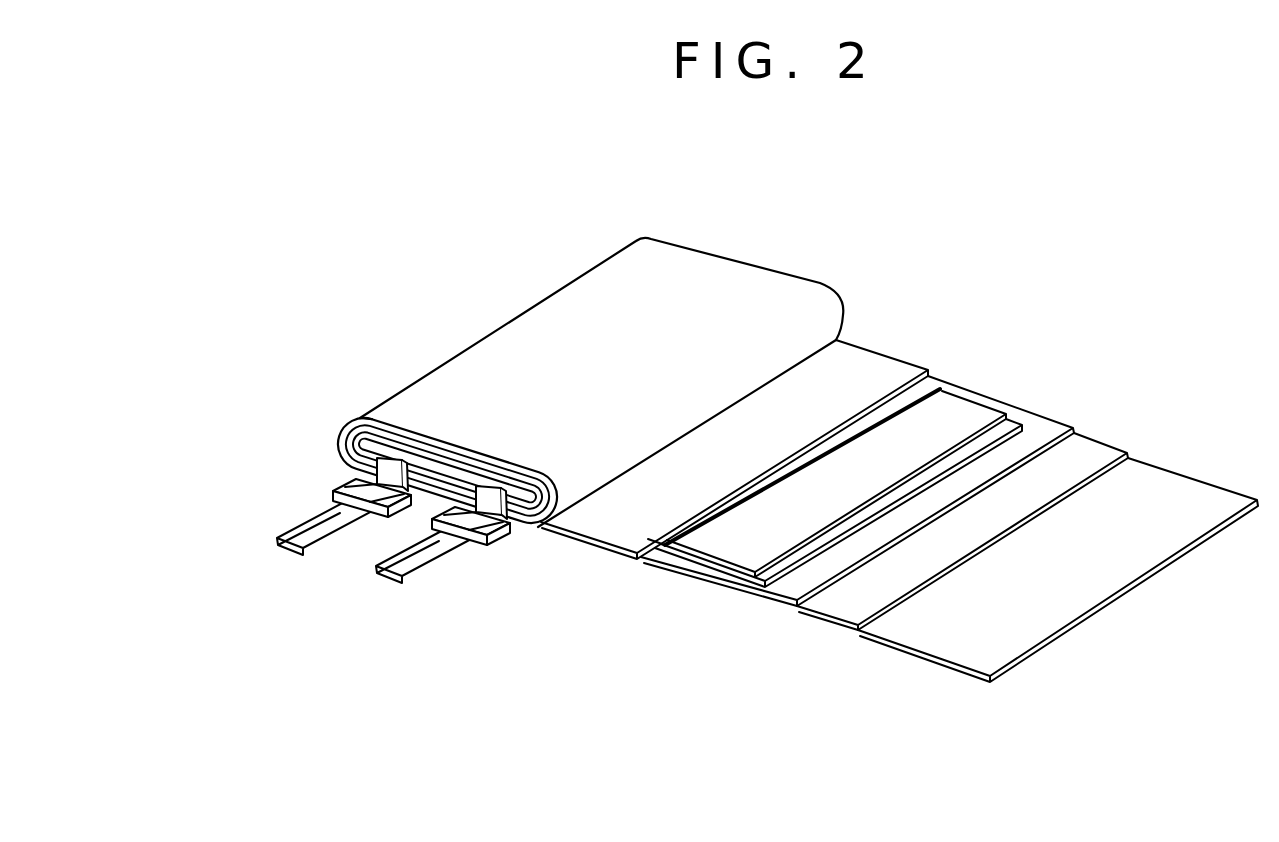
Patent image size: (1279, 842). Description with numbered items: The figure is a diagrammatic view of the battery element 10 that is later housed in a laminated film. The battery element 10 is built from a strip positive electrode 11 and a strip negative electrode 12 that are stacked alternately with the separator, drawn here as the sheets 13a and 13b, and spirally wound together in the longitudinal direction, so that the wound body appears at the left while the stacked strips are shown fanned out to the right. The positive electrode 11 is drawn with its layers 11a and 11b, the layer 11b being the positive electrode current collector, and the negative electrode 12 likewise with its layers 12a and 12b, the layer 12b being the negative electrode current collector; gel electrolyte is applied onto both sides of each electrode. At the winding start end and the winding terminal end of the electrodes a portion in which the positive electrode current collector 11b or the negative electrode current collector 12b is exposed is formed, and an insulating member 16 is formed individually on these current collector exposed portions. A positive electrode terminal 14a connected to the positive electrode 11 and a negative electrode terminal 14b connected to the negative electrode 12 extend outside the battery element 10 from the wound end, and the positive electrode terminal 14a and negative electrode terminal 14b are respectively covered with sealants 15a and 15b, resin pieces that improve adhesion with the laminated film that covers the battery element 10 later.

The battery element 10 is at (540, 278).
The positive electrode 11 is at (560, 624).
The positive electrode active material layer 11a is at (657, 555).
The positive electrode current collector 11b is at (753, 592).
The negative electrode 12 is at (743, 687).
The negative electrode active material layer 12a is at (837, 603).
The negative electrode current collector 12b is at (903, 632).
The positive electrode current collector 13a is at (870, 363).
The negative electrode current collector 13b is at (1038, 435).
The positive electrode terminal 14a is at (396, 568).
The negative electrode terminal 14b is at (297, 540).
The sealant 15a is at (473, 542).
The sealant 15b is at (333, 488).
The insulating member 16 is at (958, 410).